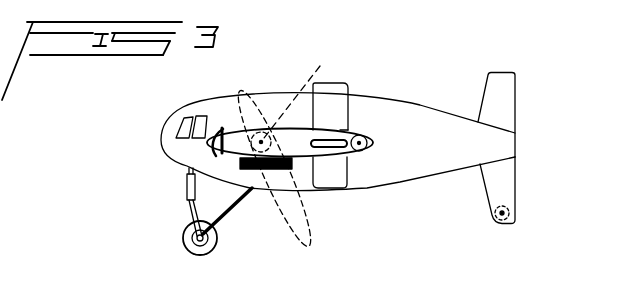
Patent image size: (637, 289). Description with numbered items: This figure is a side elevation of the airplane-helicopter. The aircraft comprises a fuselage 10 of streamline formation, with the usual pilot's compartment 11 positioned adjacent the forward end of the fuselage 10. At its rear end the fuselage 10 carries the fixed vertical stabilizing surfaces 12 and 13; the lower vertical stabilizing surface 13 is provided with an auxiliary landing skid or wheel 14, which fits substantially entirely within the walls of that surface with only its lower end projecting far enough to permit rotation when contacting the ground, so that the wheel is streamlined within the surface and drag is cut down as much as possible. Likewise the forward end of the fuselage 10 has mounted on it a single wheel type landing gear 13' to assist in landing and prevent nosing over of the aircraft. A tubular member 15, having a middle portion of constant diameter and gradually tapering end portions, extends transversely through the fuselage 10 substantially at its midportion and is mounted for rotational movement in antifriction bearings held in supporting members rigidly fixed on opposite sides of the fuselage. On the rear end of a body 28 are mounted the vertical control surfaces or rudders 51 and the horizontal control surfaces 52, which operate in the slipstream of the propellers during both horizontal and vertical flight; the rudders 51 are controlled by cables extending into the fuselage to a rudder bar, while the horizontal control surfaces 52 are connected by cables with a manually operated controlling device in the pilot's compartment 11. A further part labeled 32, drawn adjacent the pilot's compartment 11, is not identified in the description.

The fuselage 10 is at (272, 103).
The pilot's compartment 11 is at (180, 120).
The vertical stabilizing surface 12 is at (503, 93).
The lower vertical stabilizing surface 13 is at (525, 190).
The auxiliary landing skid or wheel 14 is at (512, 223).
The tubular member 15 is at (316, 85).
The body 28 is at (334, 141).
The cockpit fairing 32 is at (213, 142).
The vertical control surfaces or rudders 51 is at (293, 137).
The horizontal control surfaces 52 is at (348, 130).
The single wheel type landing gear 13' is at (234, 216).